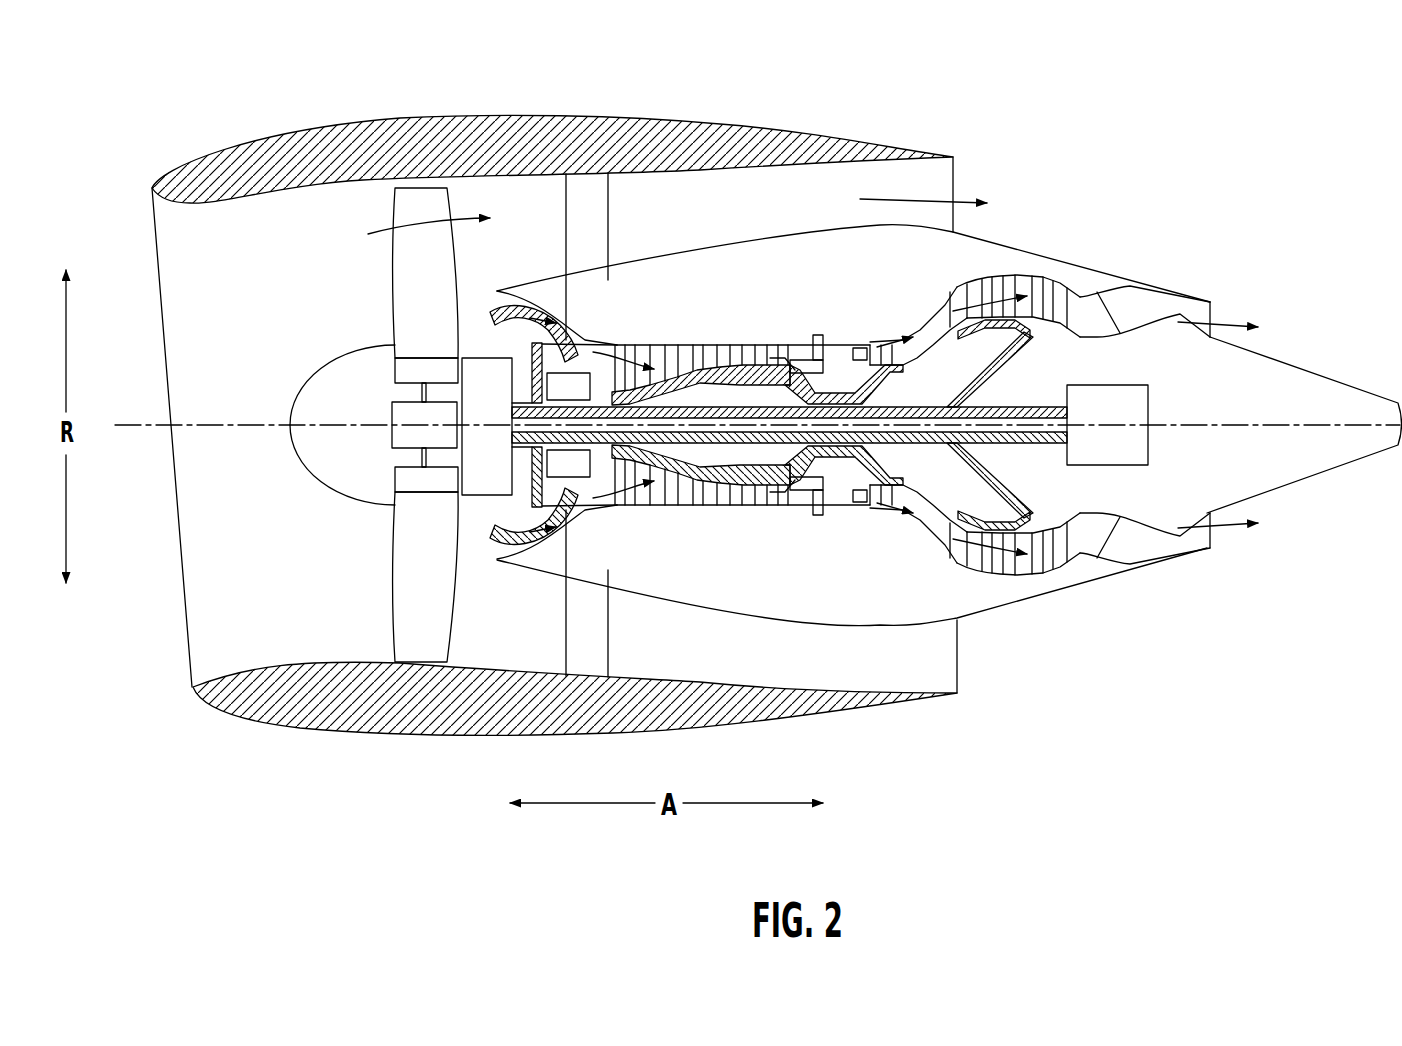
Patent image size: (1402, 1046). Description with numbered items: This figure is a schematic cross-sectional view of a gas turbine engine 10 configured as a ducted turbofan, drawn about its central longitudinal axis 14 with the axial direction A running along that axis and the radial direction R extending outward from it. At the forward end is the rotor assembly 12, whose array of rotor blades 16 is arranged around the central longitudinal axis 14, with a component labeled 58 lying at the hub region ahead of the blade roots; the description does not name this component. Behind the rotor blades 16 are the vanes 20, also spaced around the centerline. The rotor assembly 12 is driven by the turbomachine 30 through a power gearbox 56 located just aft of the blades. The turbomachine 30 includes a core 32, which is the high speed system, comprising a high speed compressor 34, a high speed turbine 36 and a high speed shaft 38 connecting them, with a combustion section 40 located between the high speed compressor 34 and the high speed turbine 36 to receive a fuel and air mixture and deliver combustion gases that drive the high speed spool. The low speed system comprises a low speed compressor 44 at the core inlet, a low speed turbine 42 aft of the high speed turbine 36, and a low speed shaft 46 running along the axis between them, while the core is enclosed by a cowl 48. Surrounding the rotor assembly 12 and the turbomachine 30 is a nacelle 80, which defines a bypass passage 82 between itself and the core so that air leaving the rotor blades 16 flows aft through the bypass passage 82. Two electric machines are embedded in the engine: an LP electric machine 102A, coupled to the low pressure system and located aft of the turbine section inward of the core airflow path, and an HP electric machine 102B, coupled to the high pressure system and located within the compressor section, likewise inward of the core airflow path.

The gas turbine engine 10 is at (1120, 128).
The rotor assembly 12 is at (344, 208).
The central longitudinal axis 14 is at (1318, 422).
The rotor blades 16 is at (390, 292).
The vanes 20 is at (608, 210).
The turbomachine 30 is at (808, 196).
The core 32 is at (870, 578).
The high speed compressor 34 is at (643, 494).
The high speed turbine 36 is at (882, 336).
The high speed shaft 38 is at (837, 400).
The combustion section 40 is at (838, 495).
The low speed turbine 42 is at (1050, 582).
The low speed compressor 44 is at (538, 565).
The low speed shaft 46 is at (728, 420).
The cowl 48 is at (788, 610).
The power gearbox 56 is at (488, 357).
The fan hub 58 is at (390, 402).
The nacelle 80 is at (447, 738).
The bypass passage 82 is at (744, 658).
The LP electric machine 102A is at (1127, 409).
The HP electric machine 102B is at (575, 380).